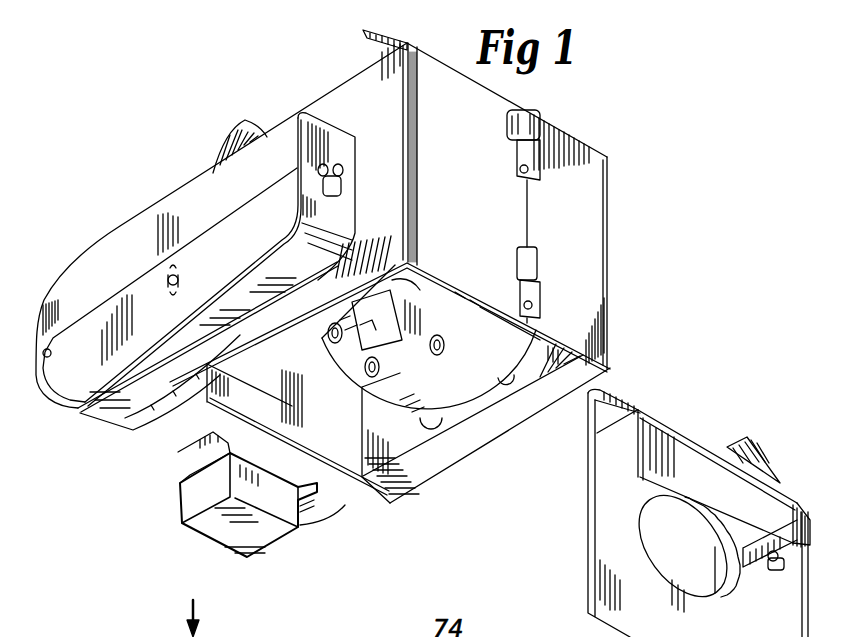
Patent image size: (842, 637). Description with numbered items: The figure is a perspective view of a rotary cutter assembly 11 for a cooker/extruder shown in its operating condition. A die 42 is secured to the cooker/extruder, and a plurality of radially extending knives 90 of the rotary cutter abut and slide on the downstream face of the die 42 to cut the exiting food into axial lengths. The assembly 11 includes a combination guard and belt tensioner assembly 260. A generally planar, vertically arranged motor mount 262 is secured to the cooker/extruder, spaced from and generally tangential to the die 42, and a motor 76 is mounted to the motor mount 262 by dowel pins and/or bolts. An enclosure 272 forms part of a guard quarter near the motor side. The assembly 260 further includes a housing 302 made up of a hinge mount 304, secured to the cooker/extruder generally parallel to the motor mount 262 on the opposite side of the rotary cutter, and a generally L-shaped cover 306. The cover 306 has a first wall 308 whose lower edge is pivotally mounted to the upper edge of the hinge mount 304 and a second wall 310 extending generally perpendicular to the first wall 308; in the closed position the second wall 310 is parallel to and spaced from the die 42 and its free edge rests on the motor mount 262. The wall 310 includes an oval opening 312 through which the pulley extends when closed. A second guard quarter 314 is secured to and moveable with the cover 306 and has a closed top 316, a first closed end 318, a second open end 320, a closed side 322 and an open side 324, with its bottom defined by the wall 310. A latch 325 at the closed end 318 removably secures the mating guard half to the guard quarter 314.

The rotary cutter assembly 11 is at (134, 173).
The enclosure 272 is at (104, 226).
The cover 306 is at (286, 110).
The latch 325 is at (342, 178).
The second wall 310 is at (487, 213).
The hinge mount 304 is at (597, 235).
The die 42 is at (434, 298).
The knives 90 is at (360, 345).
The first wall 308 is at (258, 362).
The motor mount 262 is at (357, 448).
The combination guard and belt tensioner assembly 260 is at (74, 420).
The motor 76 is at (178, 455).
The second guard quarter 314 is at (627, 397).
The closed side 322 is at (712, 413).
The closed top 316 is at (713, 485).
The second open end 320 is at (623, 437).
The housing 302 is at (575, 533).
The open side 324 is at (640, 494).
The opening 312 is at (665, 529).
The first closed end 318 is at (767, 572).